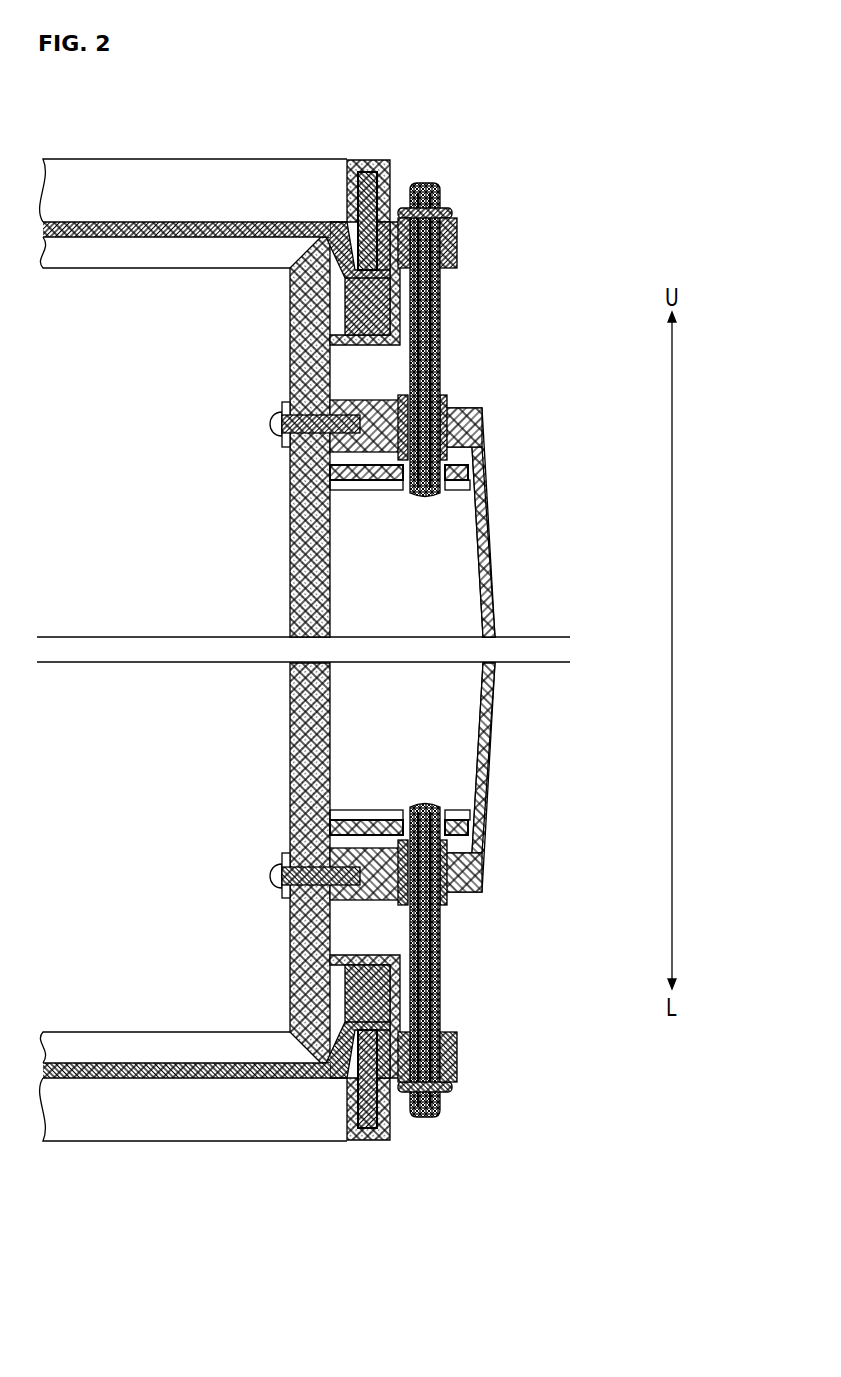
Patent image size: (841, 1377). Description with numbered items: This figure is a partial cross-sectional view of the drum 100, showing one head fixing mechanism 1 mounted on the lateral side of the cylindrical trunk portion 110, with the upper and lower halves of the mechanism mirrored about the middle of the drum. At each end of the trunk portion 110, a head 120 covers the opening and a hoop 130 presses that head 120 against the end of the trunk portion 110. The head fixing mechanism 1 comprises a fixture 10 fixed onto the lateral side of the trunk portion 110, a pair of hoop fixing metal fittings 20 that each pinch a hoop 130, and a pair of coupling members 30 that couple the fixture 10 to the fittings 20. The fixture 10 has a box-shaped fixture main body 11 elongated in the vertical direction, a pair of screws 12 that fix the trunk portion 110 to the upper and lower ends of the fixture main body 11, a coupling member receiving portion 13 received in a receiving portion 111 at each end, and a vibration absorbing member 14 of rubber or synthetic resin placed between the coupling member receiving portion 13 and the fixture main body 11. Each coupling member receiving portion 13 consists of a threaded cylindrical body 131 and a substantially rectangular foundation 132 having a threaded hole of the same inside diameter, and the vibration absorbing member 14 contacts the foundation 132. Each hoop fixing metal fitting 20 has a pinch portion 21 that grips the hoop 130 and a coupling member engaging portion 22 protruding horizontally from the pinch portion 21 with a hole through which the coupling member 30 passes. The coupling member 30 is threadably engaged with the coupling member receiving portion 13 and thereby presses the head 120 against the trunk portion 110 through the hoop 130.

The head fixing mechanism 1 is at (653, 217).
The drum 100 is at (568, 157).
The fixture 10 is at (486, 515).
The fixture main body 11 is at (490, 585).
The trunk portion 110 is at (289, 552).
The receiving portion 111 is at (350, 490).
The screw 12 is at (270, 424).
The head 120 is at (178, 222).
The coupling member receiving portion 13 is at (471, 412).
The hoop 130 is at (372, 160).
The cylindrical body 131 is at (474, 442).
The foundation 132 is at (446, 490).
The vibration absorbing member 14 is at (390, 482).
The hoop fixing metal fitting 20 is at (391, 160).
The pinch portion 21 is at (347, 183).
The coupling member engaging portion 22 is at (459, 248).
The coupling member 30 is at (447, 340).